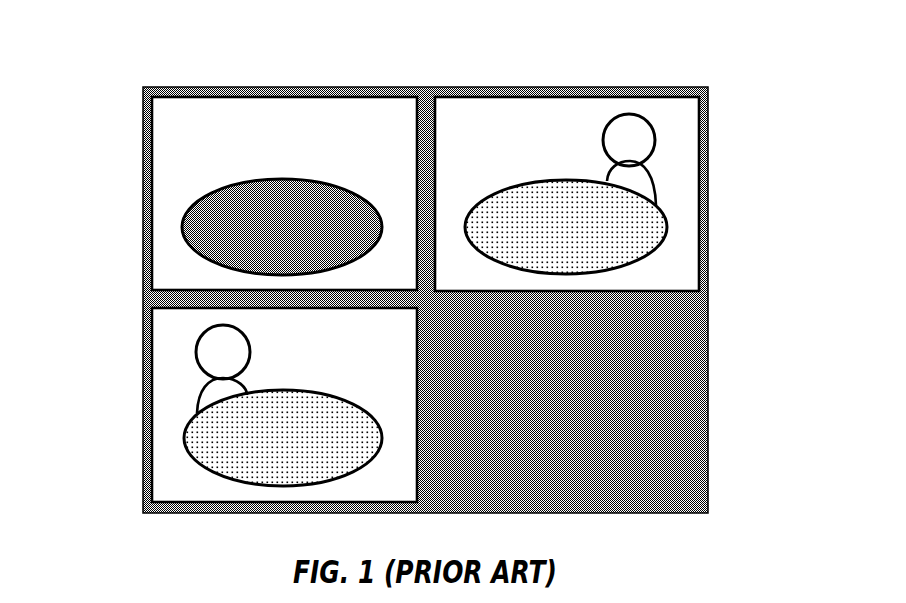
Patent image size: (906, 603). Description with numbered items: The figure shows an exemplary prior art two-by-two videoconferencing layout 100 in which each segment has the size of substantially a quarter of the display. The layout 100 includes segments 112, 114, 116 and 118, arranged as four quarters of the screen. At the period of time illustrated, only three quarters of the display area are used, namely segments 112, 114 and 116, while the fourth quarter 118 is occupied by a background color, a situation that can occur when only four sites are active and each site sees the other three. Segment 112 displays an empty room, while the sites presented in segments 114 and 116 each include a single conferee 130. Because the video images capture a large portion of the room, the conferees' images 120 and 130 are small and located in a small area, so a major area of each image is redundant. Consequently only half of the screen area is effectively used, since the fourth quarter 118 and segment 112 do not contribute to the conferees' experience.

The layout 100 is at (381, 256).
The segment 112 is at (284, 162).
The segment 114 is at (601, 156).
The segment 116 is at (236, 394).
The fourth quarter 118 is at (600, 401).
The conferee's image 120 is at (665, 113).
The conferee 130 is at (161, 349).